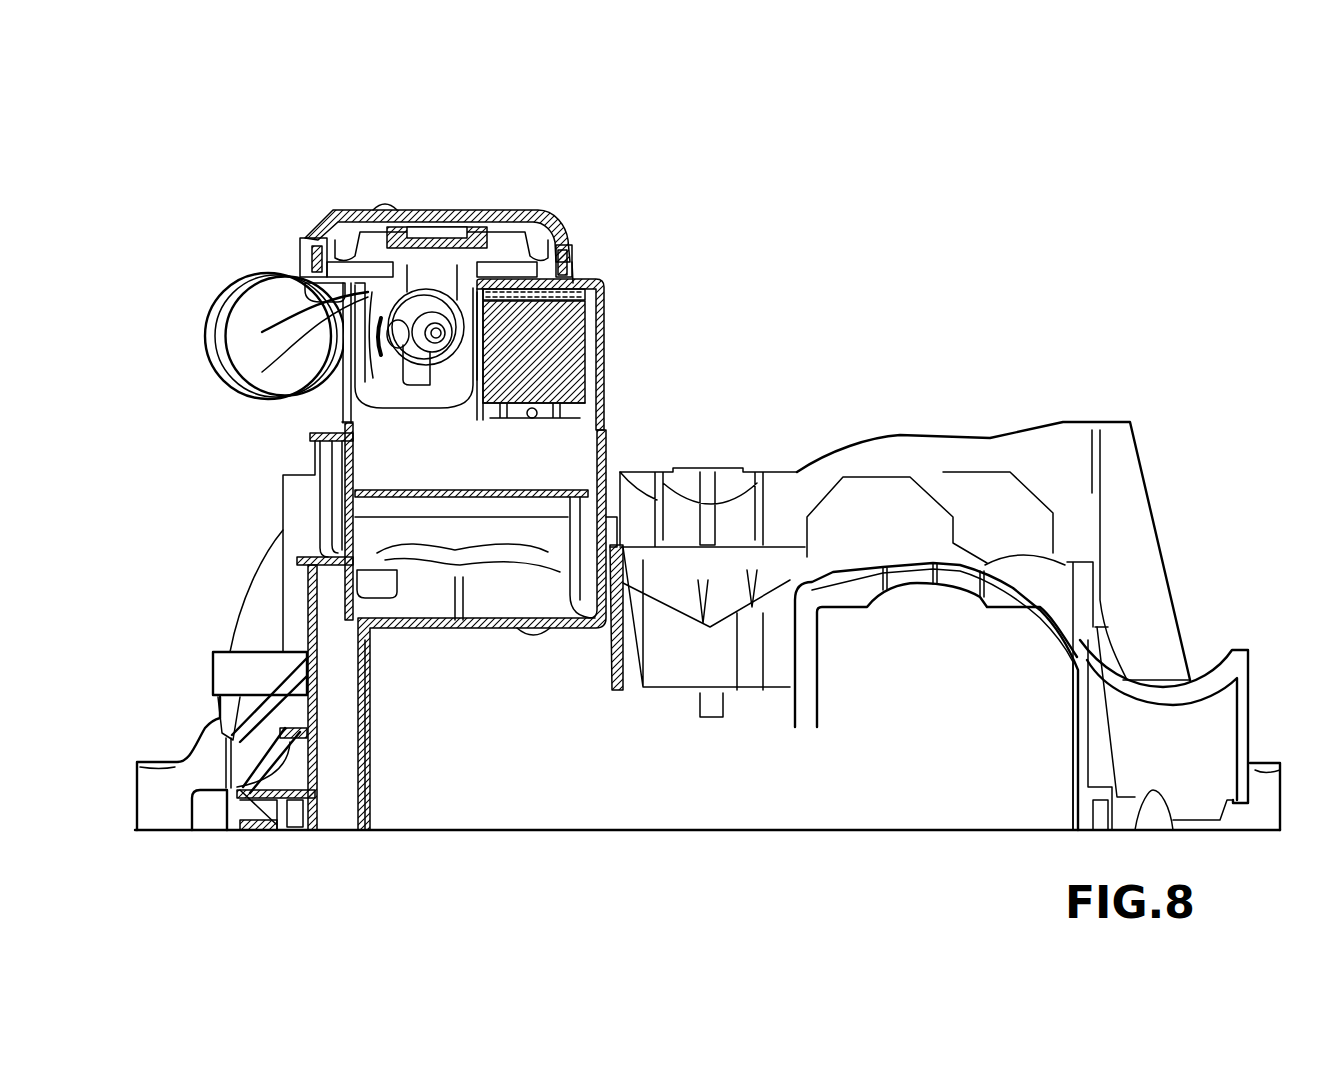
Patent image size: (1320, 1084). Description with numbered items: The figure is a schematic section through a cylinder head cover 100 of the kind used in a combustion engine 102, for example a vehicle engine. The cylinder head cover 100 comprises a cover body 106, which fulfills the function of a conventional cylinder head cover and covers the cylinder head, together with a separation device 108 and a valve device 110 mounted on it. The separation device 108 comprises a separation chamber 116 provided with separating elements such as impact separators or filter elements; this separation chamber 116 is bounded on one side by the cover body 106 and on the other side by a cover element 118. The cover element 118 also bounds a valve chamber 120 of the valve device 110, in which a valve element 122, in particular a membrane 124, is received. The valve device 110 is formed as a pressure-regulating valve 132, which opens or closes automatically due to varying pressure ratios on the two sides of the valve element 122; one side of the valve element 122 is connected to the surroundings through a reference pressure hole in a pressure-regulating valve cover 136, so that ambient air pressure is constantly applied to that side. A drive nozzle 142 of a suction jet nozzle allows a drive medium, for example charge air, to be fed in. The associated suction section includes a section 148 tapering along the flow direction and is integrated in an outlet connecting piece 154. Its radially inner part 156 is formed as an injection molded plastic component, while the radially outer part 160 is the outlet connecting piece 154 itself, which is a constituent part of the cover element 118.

The cylinder head cover 100 is at (777, 210).
The combustion engine 102 is at (874, 247).
The cover body 106 is at (970, 400).
The separation device 108 is at (620, 422).
The valve device 110 is at (418, 190).
The separation chamber 116 is at (560, 461).
The cover element 118 is at (583, 267).
The valve chamber 120 is at (600, 304).
The valve element 122 is at (345, 245).
The membrane 124 is at (353, 255).
The pressure-regulating valve 132 is at (449, 192).
The pressure-regulating valve cover 136 is at (477, 216).
The drive nozzle 142 is at (420, 408).
The tapering section 148 is at (262, 372).
The outlet connecting piece 154 is at (252, 305).
The radially inner part 156 is at (262, 332).
The radially outer part 160 is at (275, 292).